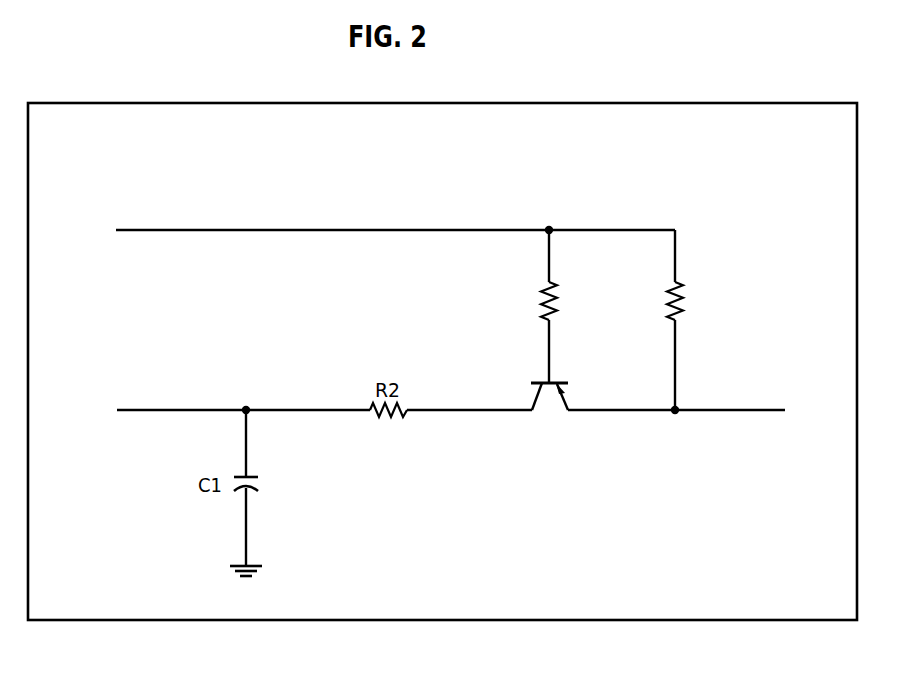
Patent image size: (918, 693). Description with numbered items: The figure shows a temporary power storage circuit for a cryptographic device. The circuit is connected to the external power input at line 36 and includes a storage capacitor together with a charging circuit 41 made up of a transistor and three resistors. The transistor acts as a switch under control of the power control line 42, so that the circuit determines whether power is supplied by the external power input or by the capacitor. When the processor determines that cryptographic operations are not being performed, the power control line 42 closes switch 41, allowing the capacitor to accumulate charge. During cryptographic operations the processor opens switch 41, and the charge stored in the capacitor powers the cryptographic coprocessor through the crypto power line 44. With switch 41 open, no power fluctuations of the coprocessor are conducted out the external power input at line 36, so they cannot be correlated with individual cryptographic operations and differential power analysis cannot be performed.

The power control line 42 is at (278, 185).
The charging circuit 41 is at (614, 208).
The crypto power line 44 is at (153, 428).
The line 36 is at (712, 428).